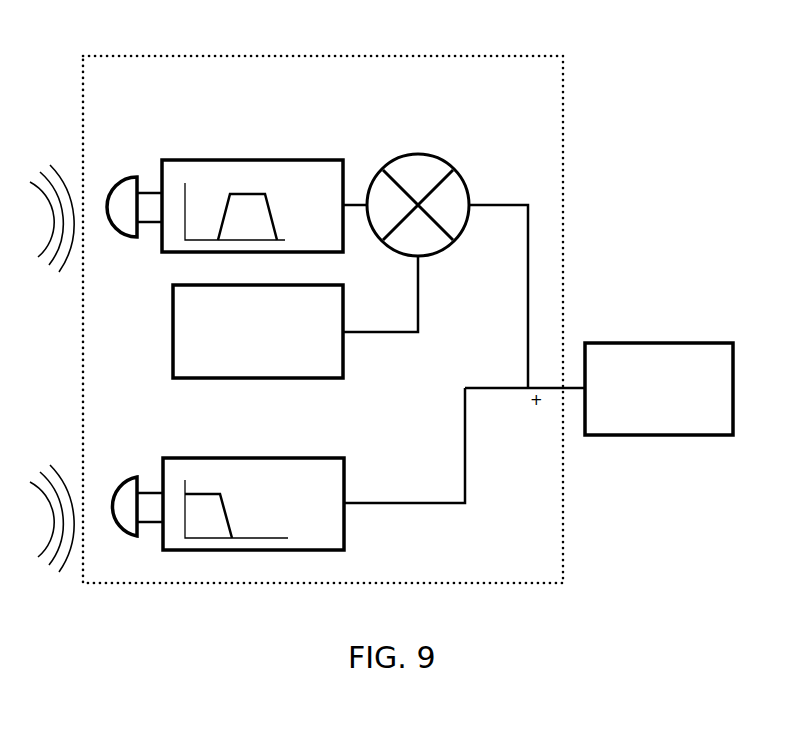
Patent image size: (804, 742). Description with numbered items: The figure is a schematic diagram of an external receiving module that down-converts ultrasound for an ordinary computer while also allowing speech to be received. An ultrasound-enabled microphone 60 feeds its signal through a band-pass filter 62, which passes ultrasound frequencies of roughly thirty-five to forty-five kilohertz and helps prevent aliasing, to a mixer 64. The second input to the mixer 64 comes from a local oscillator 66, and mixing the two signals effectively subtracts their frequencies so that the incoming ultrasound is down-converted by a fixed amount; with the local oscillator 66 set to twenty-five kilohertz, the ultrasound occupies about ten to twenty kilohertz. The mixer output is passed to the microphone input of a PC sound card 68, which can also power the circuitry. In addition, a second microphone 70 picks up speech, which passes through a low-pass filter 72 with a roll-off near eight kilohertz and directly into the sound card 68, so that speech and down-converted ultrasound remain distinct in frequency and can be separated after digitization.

The ultrasound-enabled microphone 60 is at (120, 197).
The band-pass filter 62 is at (292, 170).
The mixer 64 is at (417, 180).
The local oscillator 66 is at (258, 331).
The PC sound card 68 is at (643, 420).
The second microphone 70 is at (118, 500).
The low-pass filter 72 is at (303, 473).